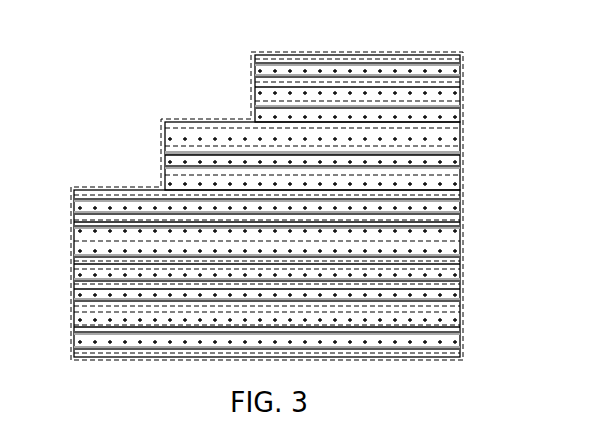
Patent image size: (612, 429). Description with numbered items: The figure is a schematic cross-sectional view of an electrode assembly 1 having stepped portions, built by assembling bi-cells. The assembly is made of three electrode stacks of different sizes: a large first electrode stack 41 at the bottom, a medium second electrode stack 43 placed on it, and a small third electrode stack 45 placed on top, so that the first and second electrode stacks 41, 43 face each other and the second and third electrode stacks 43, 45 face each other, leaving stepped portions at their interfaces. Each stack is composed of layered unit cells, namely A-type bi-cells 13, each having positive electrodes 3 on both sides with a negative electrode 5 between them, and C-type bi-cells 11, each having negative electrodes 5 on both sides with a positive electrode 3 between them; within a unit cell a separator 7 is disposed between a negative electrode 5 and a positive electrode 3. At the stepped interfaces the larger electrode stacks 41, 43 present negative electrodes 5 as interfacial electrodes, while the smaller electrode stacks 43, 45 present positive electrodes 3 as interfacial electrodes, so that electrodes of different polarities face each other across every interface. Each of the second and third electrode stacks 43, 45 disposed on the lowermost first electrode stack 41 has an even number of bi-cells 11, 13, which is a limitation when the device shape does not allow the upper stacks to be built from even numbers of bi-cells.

The electrode assembly 1 is at (90, 16).
The positive electrode 3 is at (461, 206).
The negative electrode 5 is at (461, 240).
The separator 7 is at (459, 266).
The C-type bi-cell 11 is at (466, 55).
The A-type bi-cell 13 is at (466, 123).
The first electrode stack 41 is at (69, 190).
The second electrode stack 43 is at (160, 122).
The third electrode stack 45 is at (248, 55).